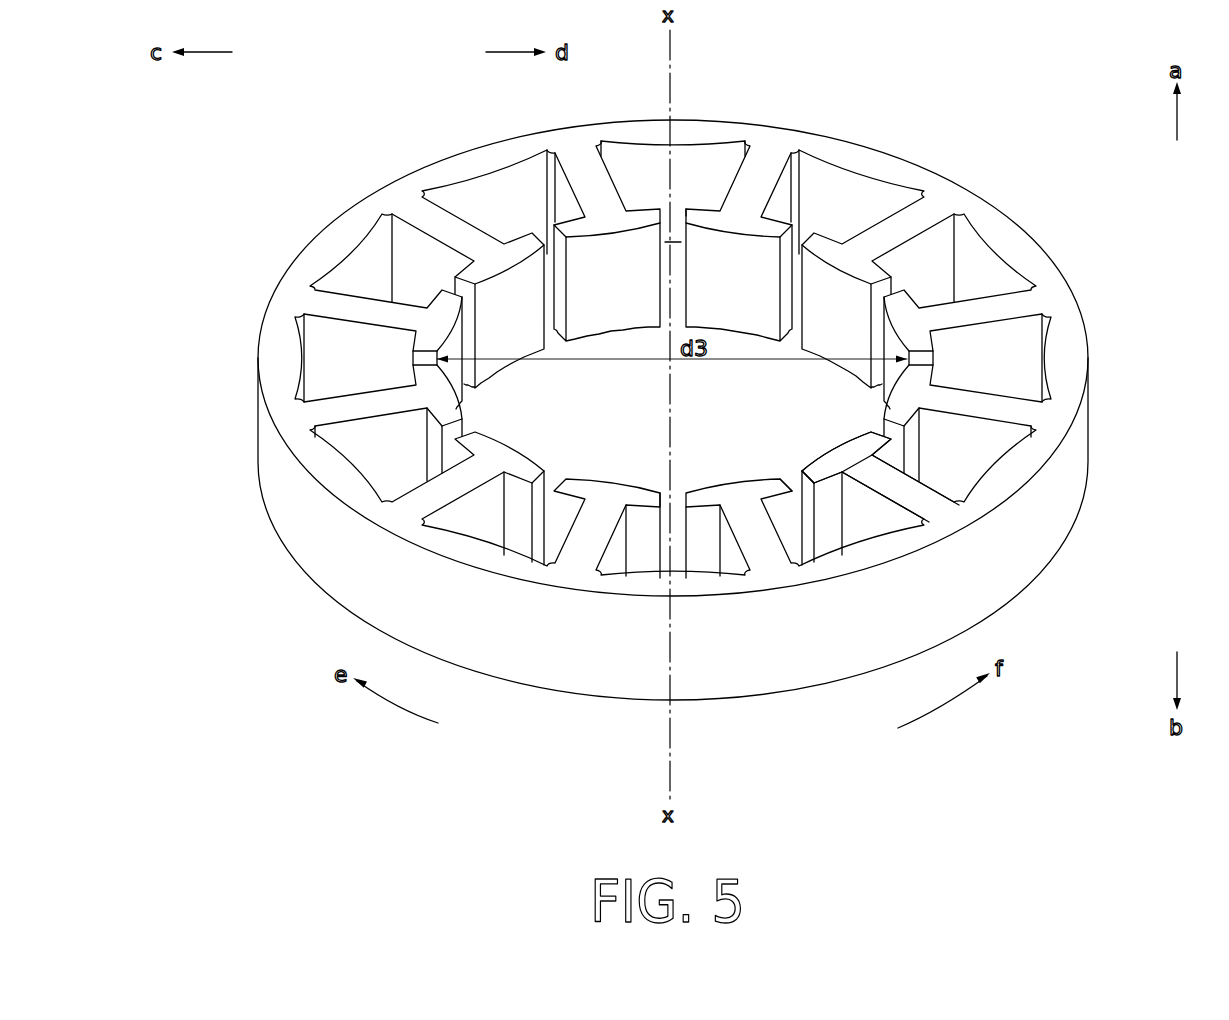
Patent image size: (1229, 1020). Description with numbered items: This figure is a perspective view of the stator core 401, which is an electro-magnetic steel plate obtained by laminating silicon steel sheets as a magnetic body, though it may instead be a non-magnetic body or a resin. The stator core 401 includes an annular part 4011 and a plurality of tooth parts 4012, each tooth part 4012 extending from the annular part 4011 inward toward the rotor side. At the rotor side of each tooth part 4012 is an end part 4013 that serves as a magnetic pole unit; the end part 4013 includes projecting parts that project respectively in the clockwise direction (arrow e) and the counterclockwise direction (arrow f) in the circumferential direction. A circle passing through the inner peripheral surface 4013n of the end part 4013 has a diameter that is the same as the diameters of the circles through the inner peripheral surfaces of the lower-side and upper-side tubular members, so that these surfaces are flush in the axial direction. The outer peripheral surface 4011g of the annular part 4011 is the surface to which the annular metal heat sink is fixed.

The stator core 401 is at (773, 28).
The annular part 4011 is at (902, 547).
The outer peripheral surface 4011g is at (775, 675).
The tooth part 4012 is at (903, 488).
The end part 4013 is at (860, 457).
The inner peripheral surface 4013n is at (840, 448).